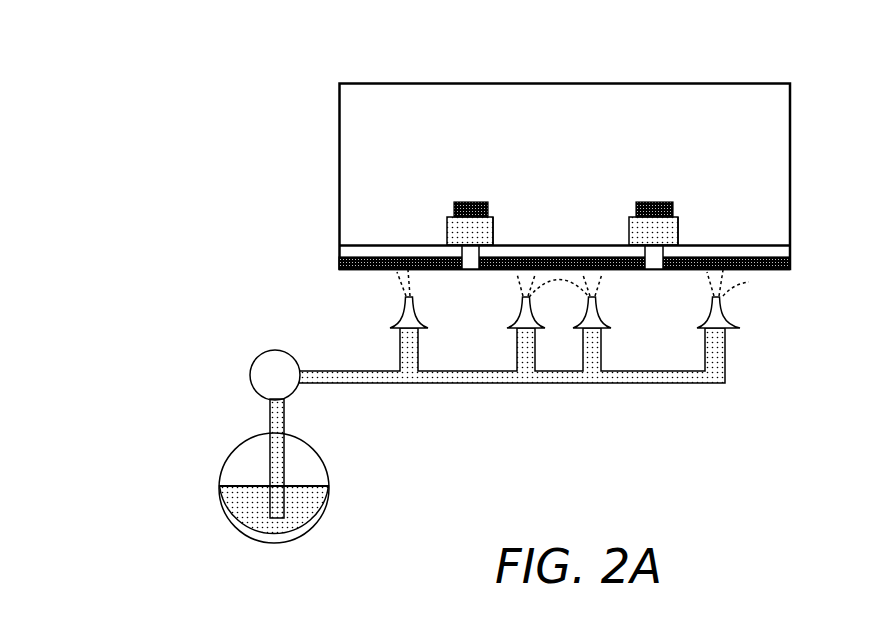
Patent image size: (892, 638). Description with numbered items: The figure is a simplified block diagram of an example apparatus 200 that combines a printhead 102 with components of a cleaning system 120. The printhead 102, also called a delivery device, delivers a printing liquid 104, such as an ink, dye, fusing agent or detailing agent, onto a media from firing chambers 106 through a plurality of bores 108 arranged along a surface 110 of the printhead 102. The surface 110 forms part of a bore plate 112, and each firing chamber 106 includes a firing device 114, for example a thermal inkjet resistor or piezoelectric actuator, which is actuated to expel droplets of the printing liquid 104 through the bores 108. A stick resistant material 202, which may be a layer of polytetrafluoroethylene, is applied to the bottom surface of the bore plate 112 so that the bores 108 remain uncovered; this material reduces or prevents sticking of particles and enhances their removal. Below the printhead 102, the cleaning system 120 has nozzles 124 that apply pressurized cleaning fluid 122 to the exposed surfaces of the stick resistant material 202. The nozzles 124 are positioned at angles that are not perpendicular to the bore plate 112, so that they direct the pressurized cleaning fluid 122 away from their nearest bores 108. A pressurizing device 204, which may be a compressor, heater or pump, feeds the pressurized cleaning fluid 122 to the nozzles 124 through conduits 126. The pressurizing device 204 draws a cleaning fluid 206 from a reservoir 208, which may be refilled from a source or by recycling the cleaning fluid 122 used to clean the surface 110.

The apparatus 200 is at (470, 35).
The printhead 102 is at (790, 127).
The printing liquid 104 is at (462, 225).
The firing chamber 106 is at (493, 217).
The bore 108 is at (480, 252).
The surface 110 is at (772, 269).
The bore plate 112 is at (339, 257).
The firing device 114 is at (455, 206).
The cleaning system 120 is at (178, 279).
The pressurized cleaning fluid 122 is at (390, 291).
The nozzle 124 is at (723, 305).
The conduit 126 is at (585, 383).
The stick resistant material 202 is at (790, 268).
The pressurizing device 204 is at (250, 375).
The cleaning fluid 206 is at (300, 486).
The reservoir 208 is at (222, 470).